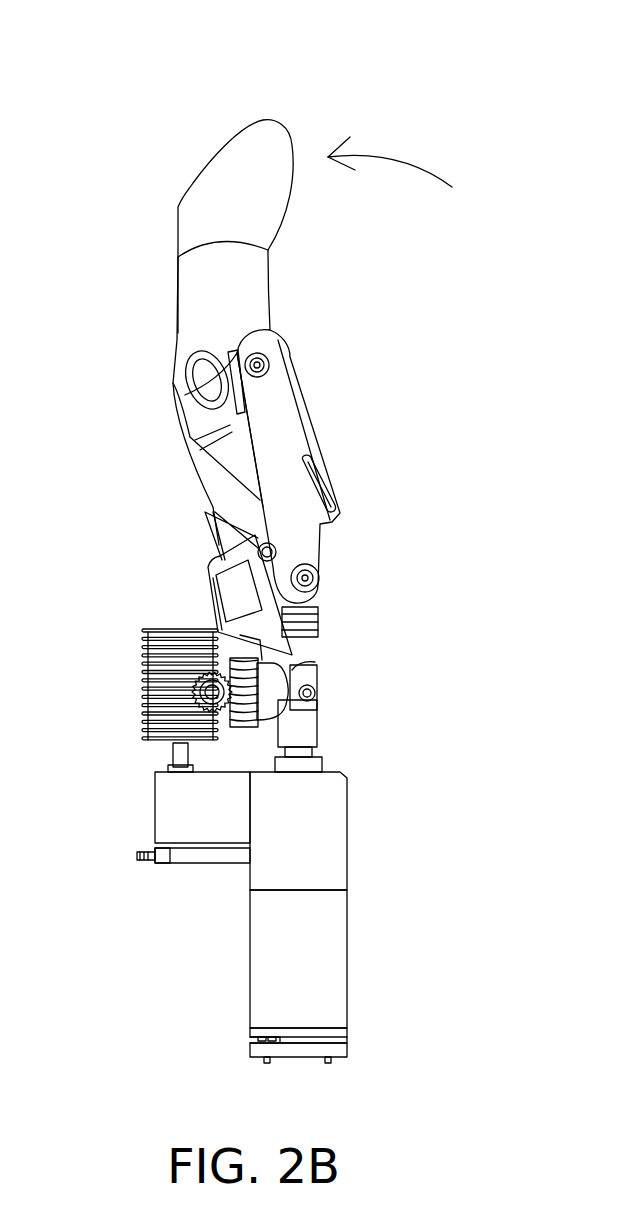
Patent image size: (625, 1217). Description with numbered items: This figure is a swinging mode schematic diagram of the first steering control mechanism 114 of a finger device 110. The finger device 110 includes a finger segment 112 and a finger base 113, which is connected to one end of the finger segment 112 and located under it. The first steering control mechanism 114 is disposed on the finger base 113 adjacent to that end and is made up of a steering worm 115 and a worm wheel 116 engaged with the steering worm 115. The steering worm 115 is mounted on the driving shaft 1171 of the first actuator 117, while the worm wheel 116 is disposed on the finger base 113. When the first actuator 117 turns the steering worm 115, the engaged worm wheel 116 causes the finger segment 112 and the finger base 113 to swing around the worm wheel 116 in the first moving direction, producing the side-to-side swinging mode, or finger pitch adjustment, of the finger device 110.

The finger device 110 is at (65, 36).
The finger segment 112 is at (295, 550).
The finger base 113 is at (300, 630).
The first steering control mechanism 114 is at (410, 642).
The steering worm 115 is at (300, 652).
The worm wheel 116 is at (310, 697).
The first actuator 117 is at (183, 813).
The driving shaft 1171 is at (183, 755).